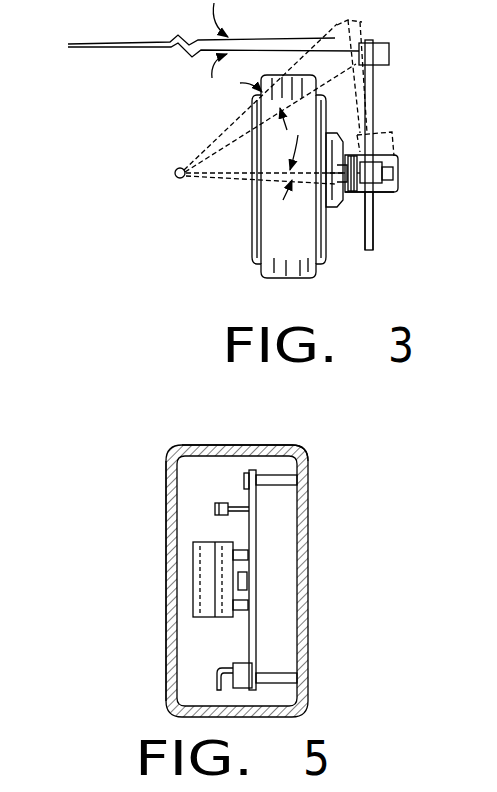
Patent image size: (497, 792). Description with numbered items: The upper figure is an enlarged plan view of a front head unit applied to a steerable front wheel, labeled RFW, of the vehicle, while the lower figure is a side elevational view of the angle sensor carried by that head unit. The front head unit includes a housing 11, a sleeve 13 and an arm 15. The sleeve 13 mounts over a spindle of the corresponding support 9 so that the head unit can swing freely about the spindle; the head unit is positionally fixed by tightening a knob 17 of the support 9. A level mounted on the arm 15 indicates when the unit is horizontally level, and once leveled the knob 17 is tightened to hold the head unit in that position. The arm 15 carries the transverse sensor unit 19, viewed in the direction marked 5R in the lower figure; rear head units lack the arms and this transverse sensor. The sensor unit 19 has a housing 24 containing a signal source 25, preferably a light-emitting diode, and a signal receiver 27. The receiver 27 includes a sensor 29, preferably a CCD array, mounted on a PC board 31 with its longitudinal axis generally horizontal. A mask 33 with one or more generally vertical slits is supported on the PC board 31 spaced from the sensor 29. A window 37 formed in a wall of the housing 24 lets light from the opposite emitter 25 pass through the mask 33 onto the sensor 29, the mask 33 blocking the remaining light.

In FIG. 3, the support 9 is at (340, 228).
In FIG. 3, the housing 11 is at (382, 193).
In FIG. 3, the sleeve 13 is at (372, 162).
In FIG. 3, the arm 15 is at (371, 81).
In FIG. 3, the knob 17 is at (397, 173).
In FIG. 3, the sensor unit 19 is at (388, 55).
In FIG. 5, the sensor unit 19 is at (323, 467).
In FIG. 3, the viewing direction 5R is at (393, 198).
In FIG. 3, the right front wheel RFW is at (230, 210).
In FIG. 5, the housing 24 is at (270, 445).
In FIG. 5, the signal source 25 is at (222, 503).
In FIG. 5, the signal receiver 27 is at (215, 623).
In FIG. 5, the sensor 29 is at (247, 581).
In FIG. 5, the PC board 31 is at (256, 635).
In FIG. 5, the mask 33 is at (193, 583).
In FIG. 5, the window 37 is at (167, 548).